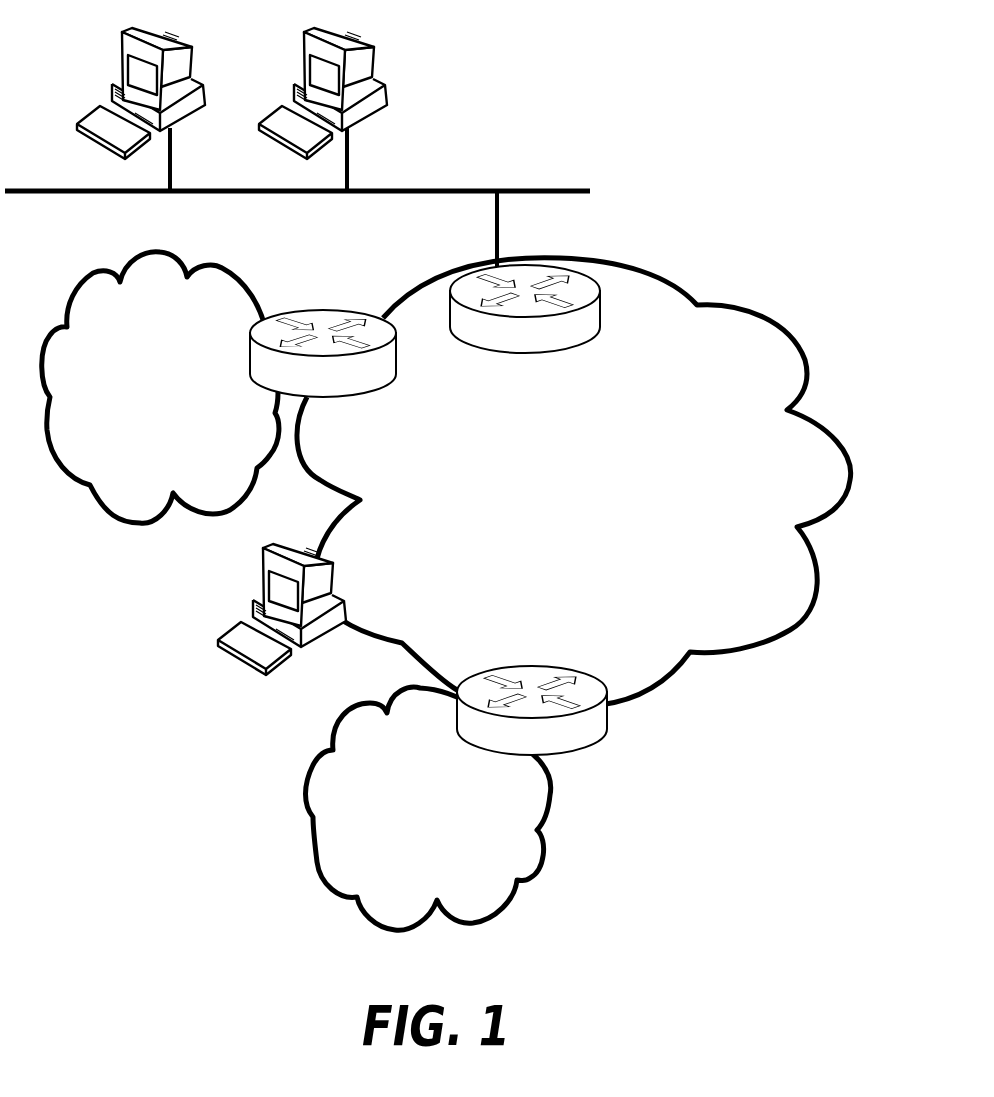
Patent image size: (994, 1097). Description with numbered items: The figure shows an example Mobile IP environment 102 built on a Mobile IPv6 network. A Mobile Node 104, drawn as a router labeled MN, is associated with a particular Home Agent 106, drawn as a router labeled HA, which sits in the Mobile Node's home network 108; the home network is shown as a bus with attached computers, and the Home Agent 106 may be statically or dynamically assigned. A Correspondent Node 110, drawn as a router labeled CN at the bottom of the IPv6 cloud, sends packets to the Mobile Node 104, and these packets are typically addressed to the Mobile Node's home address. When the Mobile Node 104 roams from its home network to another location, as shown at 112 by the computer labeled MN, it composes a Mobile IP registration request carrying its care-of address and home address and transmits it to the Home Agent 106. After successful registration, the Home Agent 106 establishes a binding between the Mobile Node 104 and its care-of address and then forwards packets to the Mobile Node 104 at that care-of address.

The Mobile IP environment 102 is at (727, 115).
The Mobile Node 104 is at (303, 310).
The Home Agent 106 is at (527, 262).
The home network 108 is at (476, 153).
The Correspondent Node 110 is at (603, 735).
The roamed location of the Mobile Node 112 is at (265, 547).